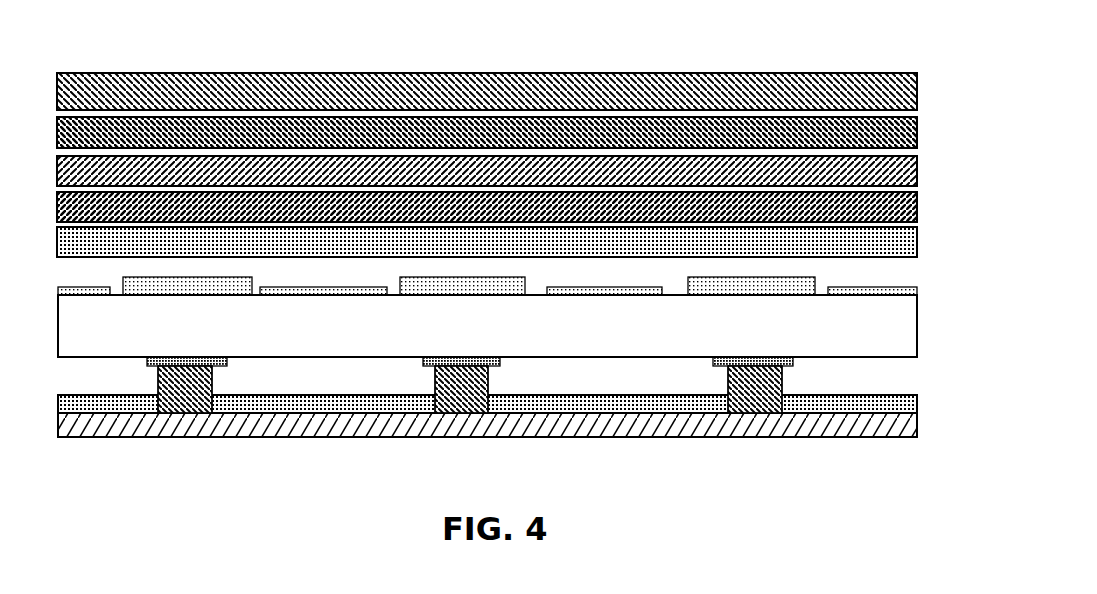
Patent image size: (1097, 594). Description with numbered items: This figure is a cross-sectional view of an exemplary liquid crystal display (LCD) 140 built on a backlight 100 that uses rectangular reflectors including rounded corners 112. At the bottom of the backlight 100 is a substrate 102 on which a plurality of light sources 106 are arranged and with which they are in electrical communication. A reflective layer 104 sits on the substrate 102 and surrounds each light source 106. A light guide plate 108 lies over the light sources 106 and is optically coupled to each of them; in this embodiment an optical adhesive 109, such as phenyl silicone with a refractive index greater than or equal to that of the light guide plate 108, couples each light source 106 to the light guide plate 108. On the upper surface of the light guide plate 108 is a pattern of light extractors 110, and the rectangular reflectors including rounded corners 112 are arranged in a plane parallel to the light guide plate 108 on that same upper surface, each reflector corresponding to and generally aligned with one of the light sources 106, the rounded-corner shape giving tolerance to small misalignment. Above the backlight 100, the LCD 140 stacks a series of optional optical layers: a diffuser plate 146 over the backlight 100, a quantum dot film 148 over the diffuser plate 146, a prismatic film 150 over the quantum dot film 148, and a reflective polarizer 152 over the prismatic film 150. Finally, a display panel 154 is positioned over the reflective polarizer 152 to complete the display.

The backlight 100 is at (380, 444).
The substrate 102 is at (902, 428).
The reflective layer 104 is at (902, 403).
The light sources 106 is at (179, 407).
The light guide plate 108 is at (924, 336).
The optical adhesive 109 is at (223, 361).
The pattern of light extractors 110 is at (907, 293).
The rectangular reflectors including rounded corners 112 is at (240, 285).
The liquid crystal display 140 is at (533, 48).
The diffuser plate 146 is at (902, 245).
The quantum dot film 148 is at (902, 207).
The prismatic film 150 is at (902, 172).
The reflective polarizer 152 is at (902, 133).
The display panel 154 is at (902, 87).